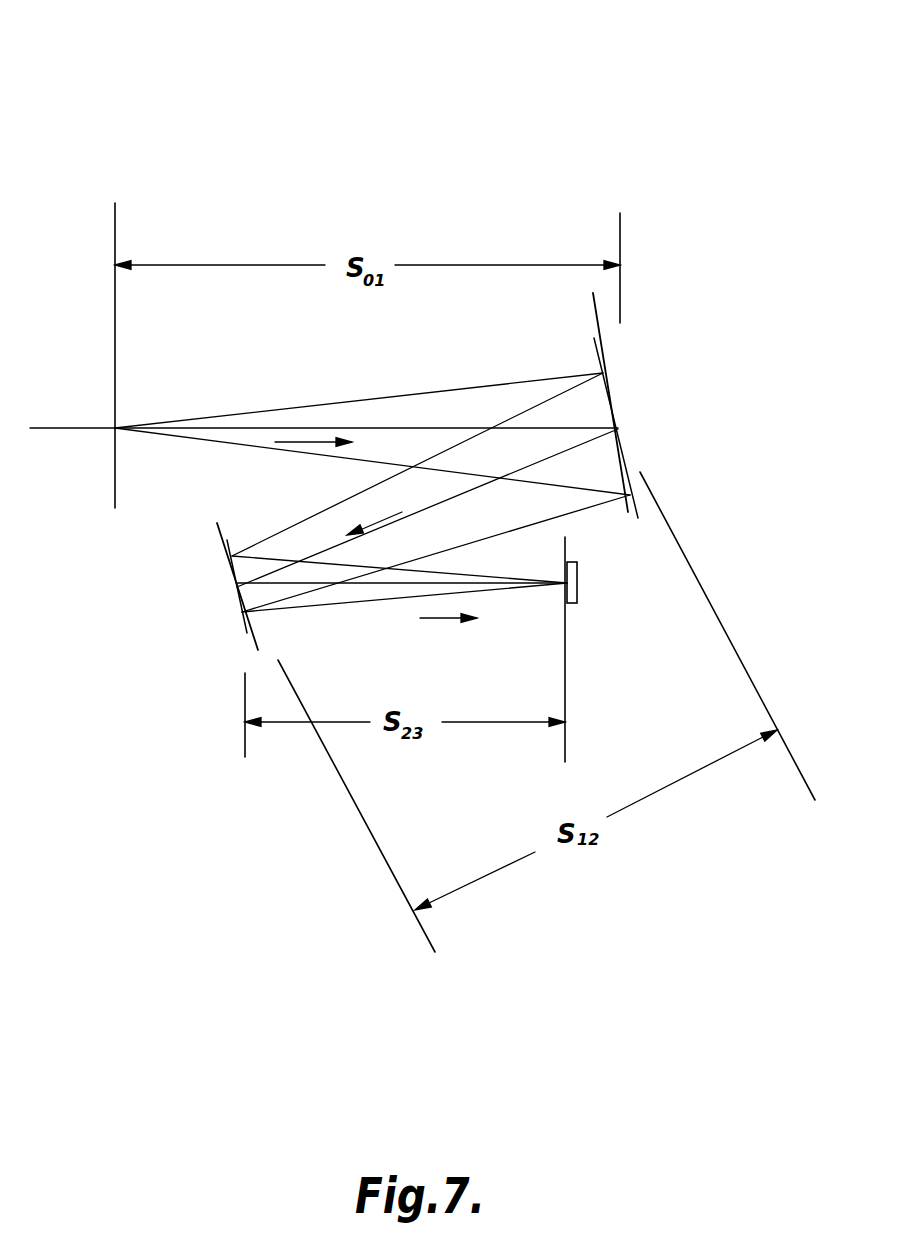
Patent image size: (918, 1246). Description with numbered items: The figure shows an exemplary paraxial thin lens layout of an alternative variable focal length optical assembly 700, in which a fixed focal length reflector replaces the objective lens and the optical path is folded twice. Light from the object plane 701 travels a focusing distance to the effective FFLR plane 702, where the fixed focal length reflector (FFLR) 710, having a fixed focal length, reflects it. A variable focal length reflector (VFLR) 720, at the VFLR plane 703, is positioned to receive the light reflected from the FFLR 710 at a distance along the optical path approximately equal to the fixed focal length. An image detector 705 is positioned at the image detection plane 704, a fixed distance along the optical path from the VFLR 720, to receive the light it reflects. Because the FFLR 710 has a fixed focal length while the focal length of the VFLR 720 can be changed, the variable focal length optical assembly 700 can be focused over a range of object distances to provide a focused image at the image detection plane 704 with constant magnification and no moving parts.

The variable focal length optical assembly 700 is at (180, 139).
The object plane 701 is at (115, 280).
The effective FFLR plane 702 is at (601, 348).
The fixed focal length reflector 710 is at (605, 362).
The VFLR plane 703 is at (217, 533).
The variable focal length reflector 720 is at (250, 643).
The image detection plane 704 is at (565, 660).
The image detector 705 is at (577, 583).